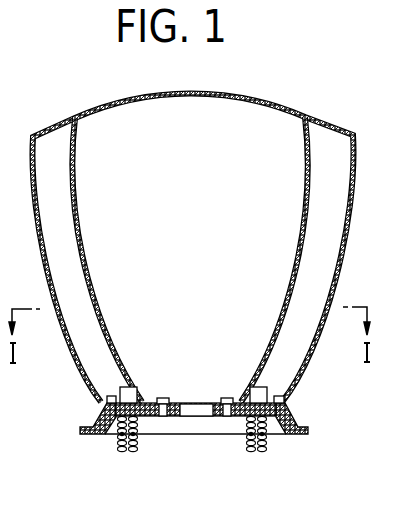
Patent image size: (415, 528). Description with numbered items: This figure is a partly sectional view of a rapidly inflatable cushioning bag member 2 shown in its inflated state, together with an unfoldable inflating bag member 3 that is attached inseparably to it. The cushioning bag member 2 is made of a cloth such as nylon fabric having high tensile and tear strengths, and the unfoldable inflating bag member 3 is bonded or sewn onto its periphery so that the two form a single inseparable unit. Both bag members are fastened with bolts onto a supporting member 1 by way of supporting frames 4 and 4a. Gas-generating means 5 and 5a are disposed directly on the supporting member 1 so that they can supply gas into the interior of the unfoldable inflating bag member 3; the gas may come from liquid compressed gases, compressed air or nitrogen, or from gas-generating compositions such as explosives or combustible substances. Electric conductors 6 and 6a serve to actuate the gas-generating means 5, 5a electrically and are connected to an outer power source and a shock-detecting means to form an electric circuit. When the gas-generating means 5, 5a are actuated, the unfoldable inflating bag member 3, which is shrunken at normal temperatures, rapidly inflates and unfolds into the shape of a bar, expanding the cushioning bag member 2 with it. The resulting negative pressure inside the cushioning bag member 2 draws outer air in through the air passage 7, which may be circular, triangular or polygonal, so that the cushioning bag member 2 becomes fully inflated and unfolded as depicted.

The supporting member 1 is at (285, 411).
The rapidly inflatable cushioning bag member 2 is at (218, 93).
The unfoldable inflating bag member 3 is at (361, 188).
The supporting frame 4 is at (164, 398).
The supporting frame 4a is at (284, 397).
The gas-generating means 5 is at (258, 387).
The gas-generating means 5a is at (125, 389).
The electric conductor 6 is at (255, 455).
The electric conductor 6a is at (125, 457).
The air passage 7 is at (197, 411).